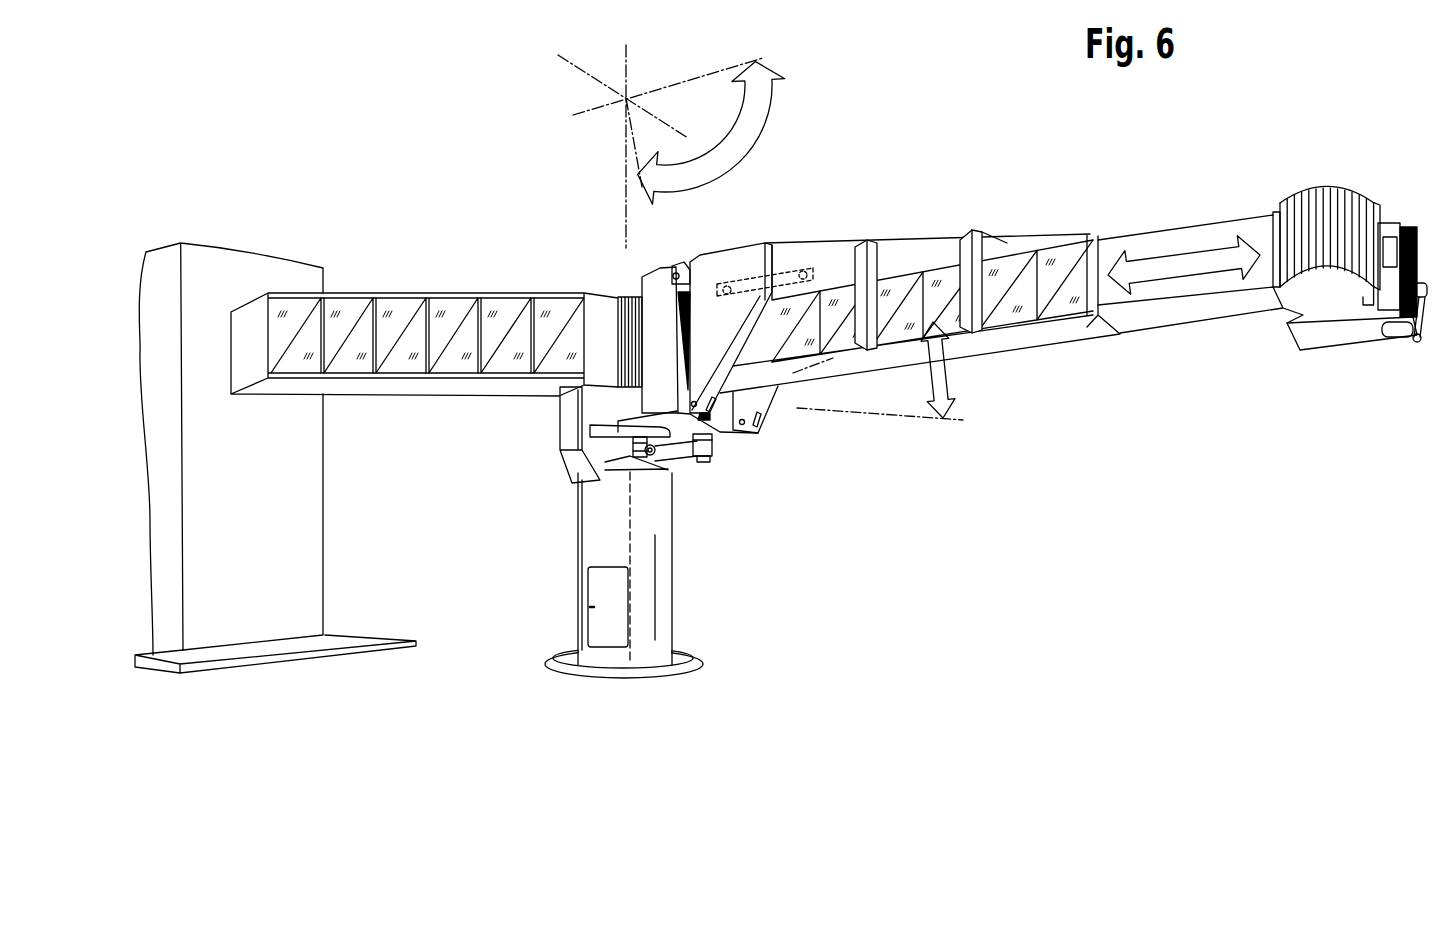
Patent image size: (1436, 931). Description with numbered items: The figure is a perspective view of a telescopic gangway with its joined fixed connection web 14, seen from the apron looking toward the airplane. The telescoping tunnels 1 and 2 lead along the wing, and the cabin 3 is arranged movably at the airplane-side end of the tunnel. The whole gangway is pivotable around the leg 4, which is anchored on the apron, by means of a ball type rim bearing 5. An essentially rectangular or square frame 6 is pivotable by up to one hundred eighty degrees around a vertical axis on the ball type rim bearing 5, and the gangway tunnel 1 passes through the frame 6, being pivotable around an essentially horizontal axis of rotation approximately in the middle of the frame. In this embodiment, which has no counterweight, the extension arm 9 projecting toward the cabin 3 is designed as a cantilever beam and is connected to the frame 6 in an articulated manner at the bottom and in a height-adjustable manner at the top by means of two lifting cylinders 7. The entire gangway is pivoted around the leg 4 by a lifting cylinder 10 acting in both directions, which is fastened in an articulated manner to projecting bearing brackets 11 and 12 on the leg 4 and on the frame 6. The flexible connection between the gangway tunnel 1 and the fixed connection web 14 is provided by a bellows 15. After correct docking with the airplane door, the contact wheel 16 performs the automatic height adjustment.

The gangway tunnel 1 is at (920, 301).
The telescoping tunnel 2 is at (1183, 313).
The cabin 3 is at (1338, 335).
The leg 4 is at (647, 611).
The ball type rim bearing 5 is at (617, 427).
The frame 6 is at (656, 290).
The lifting cylinders 7 is at (742, 270).
The extension arm 9 is at (915, 250).
The lifting cylinder 10 is at (650, 464).
The bearing bracket 11 is at (653, 470).
The bearing bracket 12 is at (712, 443).
The fixed connection web 14 is at (402, 395).
The bellows 15 is at (628, 292).
The contact wheel 16 is at (1427, 273).